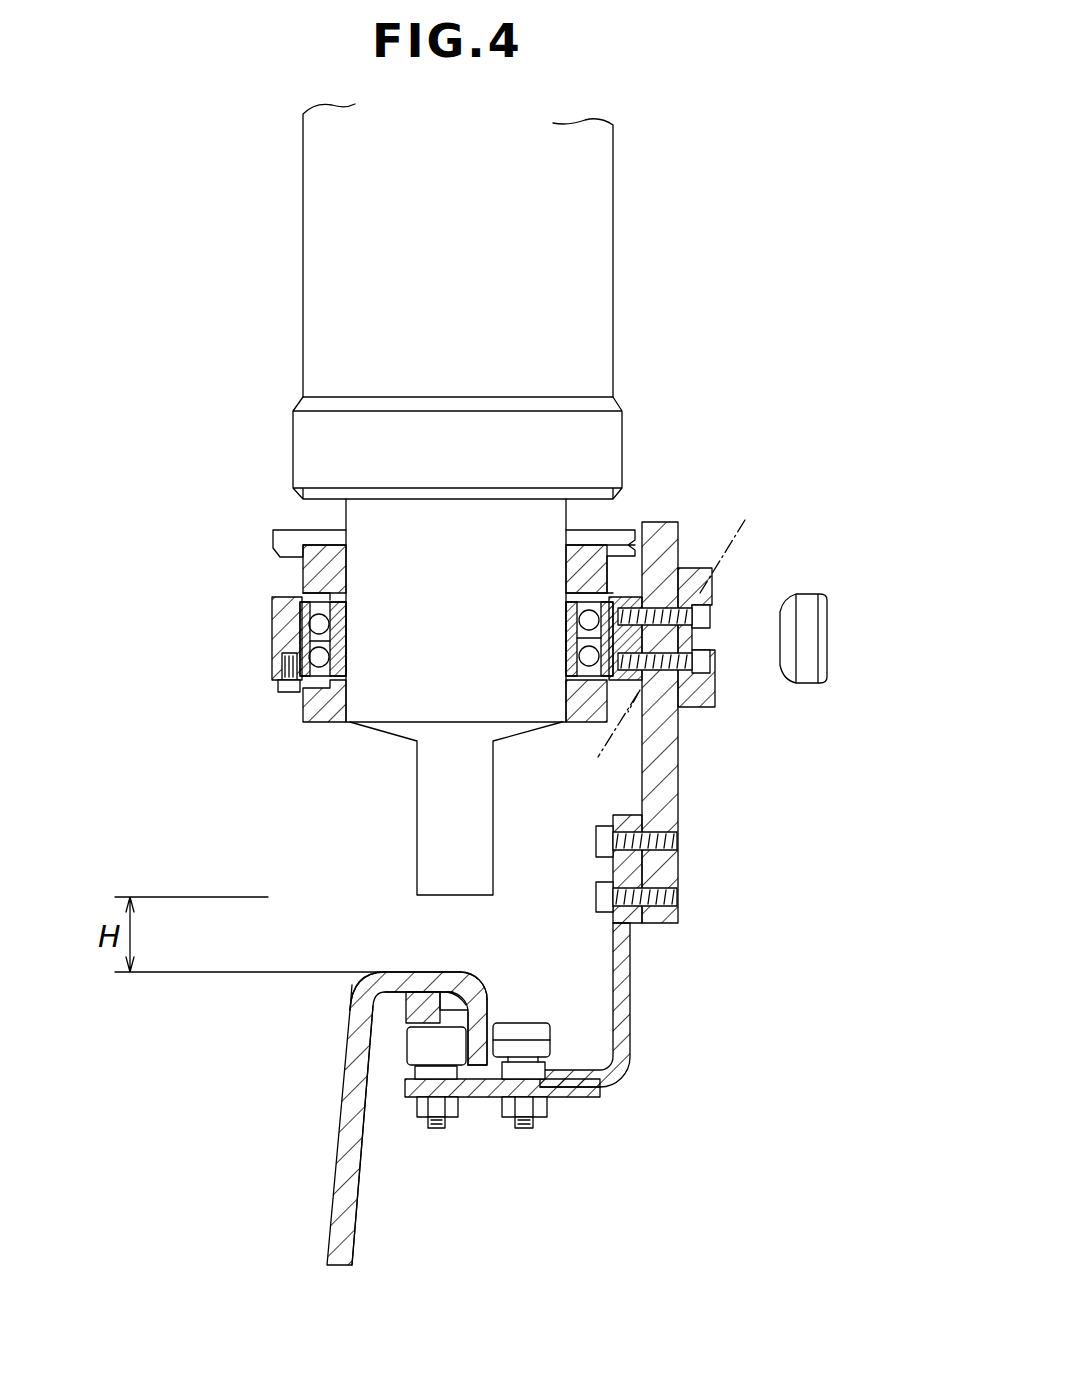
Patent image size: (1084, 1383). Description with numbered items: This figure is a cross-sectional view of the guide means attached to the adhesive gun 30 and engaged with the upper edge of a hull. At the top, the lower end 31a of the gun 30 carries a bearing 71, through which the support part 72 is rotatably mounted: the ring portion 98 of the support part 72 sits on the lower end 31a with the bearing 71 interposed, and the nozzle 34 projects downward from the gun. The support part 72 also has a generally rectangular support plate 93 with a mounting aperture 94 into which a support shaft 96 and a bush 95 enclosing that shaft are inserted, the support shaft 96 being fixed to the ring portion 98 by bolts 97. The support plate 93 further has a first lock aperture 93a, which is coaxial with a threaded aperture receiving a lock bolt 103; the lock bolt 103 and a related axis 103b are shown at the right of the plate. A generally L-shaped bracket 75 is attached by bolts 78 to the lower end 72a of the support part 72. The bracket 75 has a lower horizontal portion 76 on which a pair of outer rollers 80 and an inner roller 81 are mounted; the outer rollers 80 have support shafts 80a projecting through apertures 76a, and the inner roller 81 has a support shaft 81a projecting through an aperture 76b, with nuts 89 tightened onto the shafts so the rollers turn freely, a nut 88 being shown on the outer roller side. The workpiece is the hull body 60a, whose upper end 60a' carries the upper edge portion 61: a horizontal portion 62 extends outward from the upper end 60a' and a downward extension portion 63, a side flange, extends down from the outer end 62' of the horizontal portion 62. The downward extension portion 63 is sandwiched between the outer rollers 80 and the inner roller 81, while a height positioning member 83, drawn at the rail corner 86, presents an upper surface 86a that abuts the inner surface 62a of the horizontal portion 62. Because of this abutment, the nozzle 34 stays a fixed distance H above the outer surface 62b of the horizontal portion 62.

The gun 30 is at (630, 216).
The lower end of the gun 31a is at (510, 522).
The nozzle 34 is at (427, 803).
The hull body 60a is at (337, 1118).
The upper end of the hull body 60a' is at (292, 914).
The upper edge portion 61 is at (378, 985).
The horizontal portion 62 is at (410, 937).
The outer end of the horizontal portion 62' is at (514, 972).
The inner surface of the horizontal portion 62a is at (480, 1008).
The outer surface of the horizontal portion 62b is at (417, 972).
The downward extension portion 63 is at (500, 1022).
The bearing 71 is at (272, 625).
The support part 72 is at (770, 666).
The lower end of the support part 72a is at (678, 865).
The L-shaped bracket 75 is at (630, 960).
The lower horizontal portion 76 is at (483, 1097).
The apertures 76a is at (538, 1130).
The aperture 76b is at (437, 1130).
The bolts 78 is at (598, 846).
The outer rollers 80 is at (550, 1035).
The support shafts 80a is at (592, 1090).
The inner roller 81 is at (407, 1045).
The support shaft 81a is at (415, 1086).
The height positioning member 83 is at (390, 1013).
The rail corner 86 is at (355, 1000).
The upper surface 86a is at (425, 998).
The nut 88 is at (547, 1102).
The nuts 89 is at (420, 1117).
The support plate 93 is at (637, 588).
The first lock aperture 93a is at (597, 743).
The mounting aperture 94 is at (707, 597).
The bush 95 is at (712, 610).
The support shaft 96 is at (712, 662).
The bolts 97 is at (712, 682).
The ring portion 98 is at (672, 547).
The lock bolt 103 is at (715, 623).
The knob axis 103b is at (707, 623).